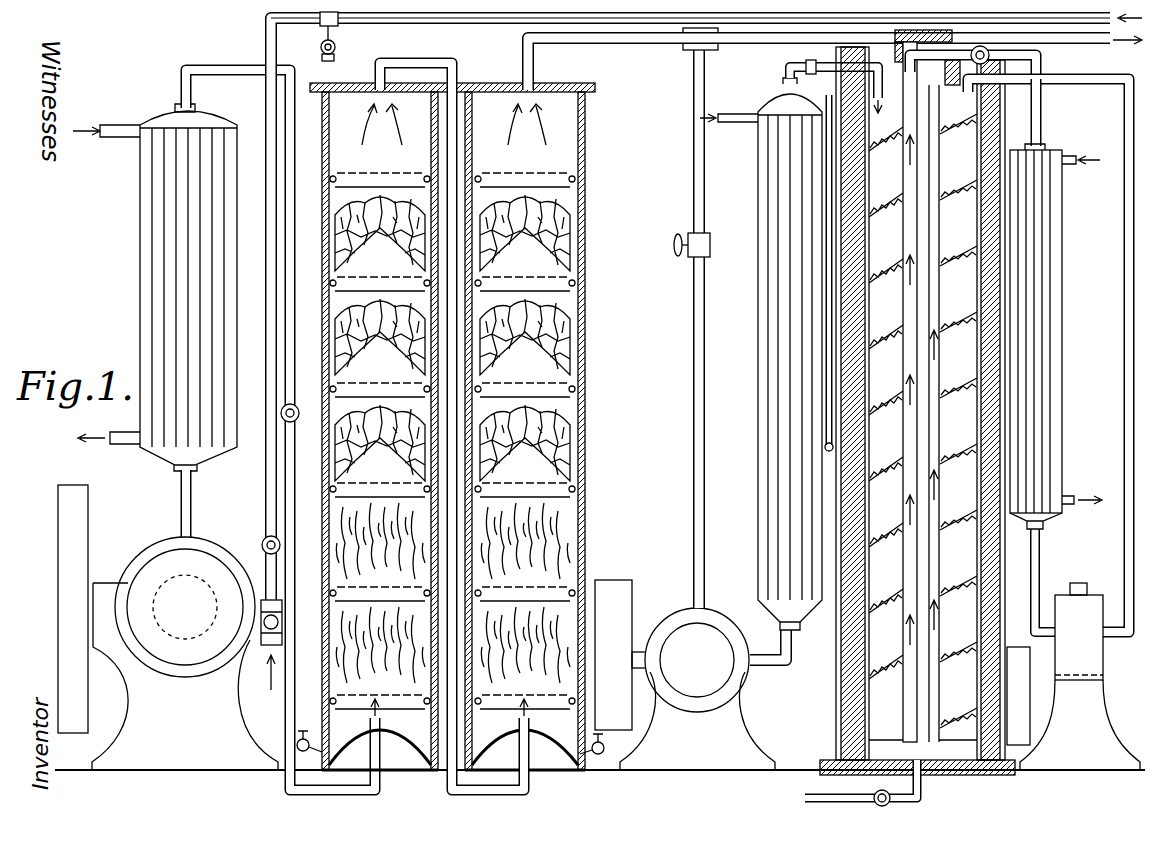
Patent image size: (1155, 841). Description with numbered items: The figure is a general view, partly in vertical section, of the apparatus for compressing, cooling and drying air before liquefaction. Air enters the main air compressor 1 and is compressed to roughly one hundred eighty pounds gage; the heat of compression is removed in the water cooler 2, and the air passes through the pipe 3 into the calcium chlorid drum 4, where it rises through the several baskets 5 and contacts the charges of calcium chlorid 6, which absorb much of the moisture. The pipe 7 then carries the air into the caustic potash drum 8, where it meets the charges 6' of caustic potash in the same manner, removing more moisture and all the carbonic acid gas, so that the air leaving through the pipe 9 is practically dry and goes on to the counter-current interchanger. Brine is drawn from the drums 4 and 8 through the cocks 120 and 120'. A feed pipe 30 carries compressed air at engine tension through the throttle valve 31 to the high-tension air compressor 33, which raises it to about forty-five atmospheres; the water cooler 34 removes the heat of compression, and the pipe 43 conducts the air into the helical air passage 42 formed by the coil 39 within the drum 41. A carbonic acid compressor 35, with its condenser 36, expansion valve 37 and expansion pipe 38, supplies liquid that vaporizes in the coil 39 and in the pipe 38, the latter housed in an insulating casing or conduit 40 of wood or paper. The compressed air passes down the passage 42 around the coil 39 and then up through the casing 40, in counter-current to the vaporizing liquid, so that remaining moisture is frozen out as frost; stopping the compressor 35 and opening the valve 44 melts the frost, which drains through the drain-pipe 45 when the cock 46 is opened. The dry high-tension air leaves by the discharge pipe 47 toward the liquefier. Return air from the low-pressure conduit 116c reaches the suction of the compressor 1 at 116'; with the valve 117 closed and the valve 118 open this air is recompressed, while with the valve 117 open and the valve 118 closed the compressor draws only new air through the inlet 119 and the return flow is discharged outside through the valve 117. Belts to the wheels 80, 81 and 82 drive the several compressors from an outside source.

The main air compressor 1 is at (162, 574).
The water cooler 2 is at (160, 282).
The pipe 3 is at (292, 198).
The calcium chlorid drum 4 is at (324, 322).
The baskets 5 is at (381, 288).
The charges of calcium chlorid 6 is at (380, 439).
The absorbent material 6' is at (525, 439).
The pipe 7 is at (449, 790).
The caustic potash drum 8 is at (586, 300).
The pipe 9 is at (610, 46).
The feed pipe 30 is at (693, 158).
The throttle valve 31 is at (702, 244).
The high-tension air compressor 33 is at (712, 668).
The water cooler 34 is at (762, 376).
The CO2 compressor 35 is at (1078, 652).
The condenser 36 is at (1046, 304).
The expansion valve 37 is at (1004, 74).
The expansion pipe 38 is at (924, 330).
The coil 39 is at (1022, 248).
The insulating casing or conduit 40 is at (955, 395).
The drum 41 is at (992, 548).
The helical air passage 42 is at (966, 474).
The pipe 43 is at (778, 67).
The valve 44 is at (772, 89).
The drain-pipe 45 is at (840, 800).
The cock 46 is at (887, 805).
The discharge pipe 47 is at (826, 428).
The wheel 80 is at (72, 572).
The wheel 81 is at (620, 616).
The wheel 82 is at (1020, 668).
The connection to compressor suction 116' is at (676, 352).
The pipe 116c is at (510, 22).
The valve 117 is at (342, 47).
The valve 118 is at (268, 534).
The inlet 119 is at (262, 645).
The cock 120 is at (260, 775).
The cock 120' is at (611, 779).